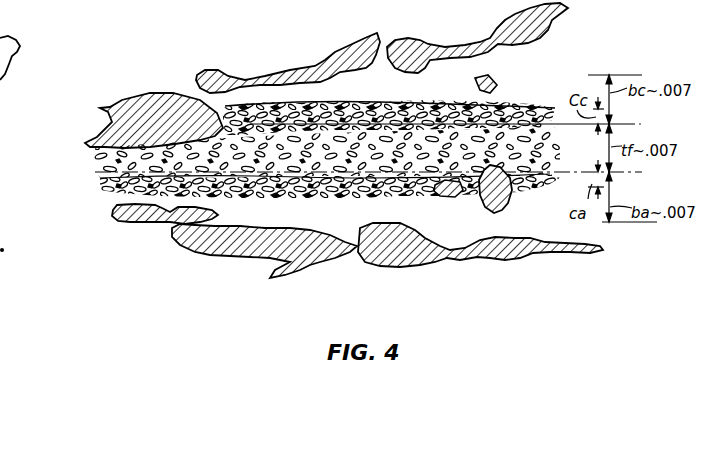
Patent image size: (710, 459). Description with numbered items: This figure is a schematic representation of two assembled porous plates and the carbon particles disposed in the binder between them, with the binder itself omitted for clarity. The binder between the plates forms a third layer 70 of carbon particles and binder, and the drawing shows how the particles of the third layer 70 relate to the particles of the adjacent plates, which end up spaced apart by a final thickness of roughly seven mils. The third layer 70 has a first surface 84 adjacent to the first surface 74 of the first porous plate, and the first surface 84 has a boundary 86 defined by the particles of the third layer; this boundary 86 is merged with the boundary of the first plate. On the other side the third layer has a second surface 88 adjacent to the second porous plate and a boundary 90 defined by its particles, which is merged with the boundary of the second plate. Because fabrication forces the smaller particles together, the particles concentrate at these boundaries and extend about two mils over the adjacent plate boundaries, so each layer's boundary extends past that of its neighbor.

The third layer 70 is at (180, 172).
The first surface of the first porous plate 74 is at (100, 150).
The first surface of the third layer 84 is at (519, 100).
The boundary of the first surface 86 is at (451, 106).
The second surface of the third layer 88 is at (345, 196).
The boundary of the second surface 90 is at (300, 194).